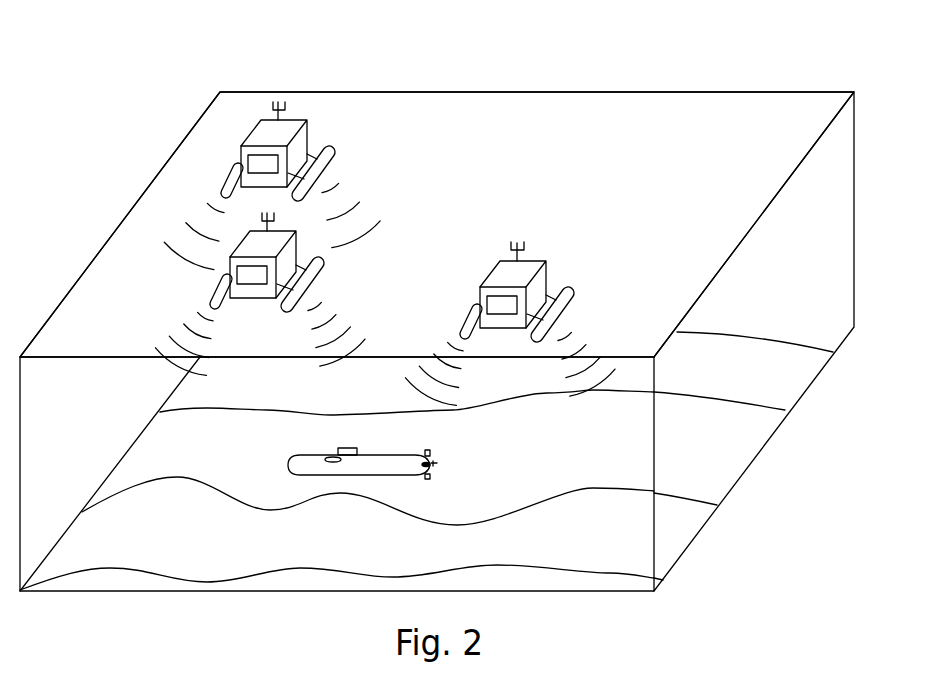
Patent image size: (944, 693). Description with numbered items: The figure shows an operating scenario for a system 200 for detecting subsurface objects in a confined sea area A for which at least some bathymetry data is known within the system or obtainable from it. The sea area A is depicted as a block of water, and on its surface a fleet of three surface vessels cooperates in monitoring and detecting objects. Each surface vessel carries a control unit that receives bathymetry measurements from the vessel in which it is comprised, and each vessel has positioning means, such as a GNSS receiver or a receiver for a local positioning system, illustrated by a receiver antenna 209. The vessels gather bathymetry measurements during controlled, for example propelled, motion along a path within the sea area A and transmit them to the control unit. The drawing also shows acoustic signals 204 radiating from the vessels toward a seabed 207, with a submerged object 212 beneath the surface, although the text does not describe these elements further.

The system 200 is at (293, 60).
The confined sea area A is at (633, 117).
The acoustic signals 204 is at (175, 320).
The seabed 207 is at (557, 495).
The receiver antenna 209 is at (517, 242).
The submarine 212 is at (378, 441).